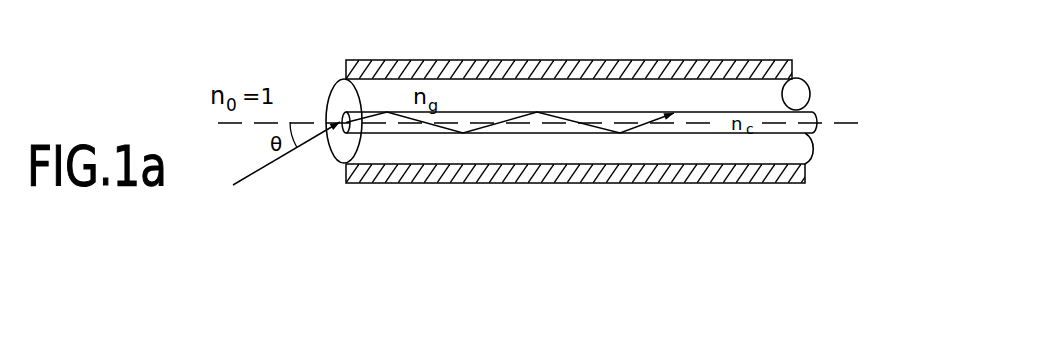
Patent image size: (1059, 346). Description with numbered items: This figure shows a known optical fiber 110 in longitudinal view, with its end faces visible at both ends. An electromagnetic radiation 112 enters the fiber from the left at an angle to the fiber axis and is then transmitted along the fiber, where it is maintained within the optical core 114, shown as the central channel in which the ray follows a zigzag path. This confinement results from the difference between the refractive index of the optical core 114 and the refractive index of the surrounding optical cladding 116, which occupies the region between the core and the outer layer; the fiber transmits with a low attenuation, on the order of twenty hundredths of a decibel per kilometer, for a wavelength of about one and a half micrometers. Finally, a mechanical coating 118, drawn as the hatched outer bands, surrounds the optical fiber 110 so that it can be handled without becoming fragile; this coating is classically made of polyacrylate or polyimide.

The optical fiber 110 is at (571, 112).
The electromagnetic radiation 112 is at (261, 169).
The optical core 114 is at (468, 117).
The optical cladding 116 is at (399, 93).
The mechanical coating 118 is at (573, 173).